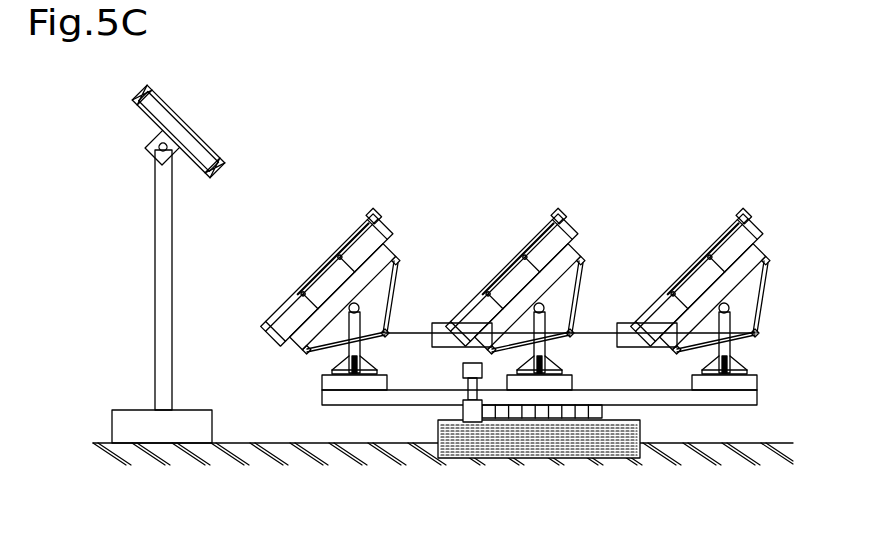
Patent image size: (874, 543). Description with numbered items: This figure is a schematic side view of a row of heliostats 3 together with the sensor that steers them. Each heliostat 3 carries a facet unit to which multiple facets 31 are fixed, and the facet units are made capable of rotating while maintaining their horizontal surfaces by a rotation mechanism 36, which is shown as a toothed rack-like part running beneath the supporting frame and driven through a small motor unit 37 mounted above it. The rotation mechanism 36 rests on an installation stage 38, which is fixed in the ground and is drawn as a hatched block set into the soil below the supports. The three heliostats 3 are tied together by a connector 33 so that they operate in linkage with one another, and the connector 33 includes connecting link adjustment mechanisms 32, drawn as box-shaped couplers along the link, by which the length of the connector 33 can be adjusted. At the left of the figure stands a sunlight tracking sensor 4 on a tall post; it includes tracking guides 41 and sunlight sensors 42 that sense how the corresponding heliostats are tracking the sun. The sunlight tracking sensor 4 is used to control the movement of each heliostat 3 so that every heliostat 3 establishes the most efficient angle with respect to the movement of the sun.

The heliostat 3 is at (588, 152).
The facet 31 is at (282, 312).
The connecting link adjustment mechanism 32 is at (631, 335).
The connector 33 is at (763, 296).
The rotation mechanism 36 is at (607, 411).
The drive motor with pinion 37 is at (463, 409).
The installation stage 38 is at (588, 478).
The sunlight tracking sensor 4 is at (169, 245).
The tracking guide 41 is at (131, 103).
The sunlight sensor 42 is at (209, 178).